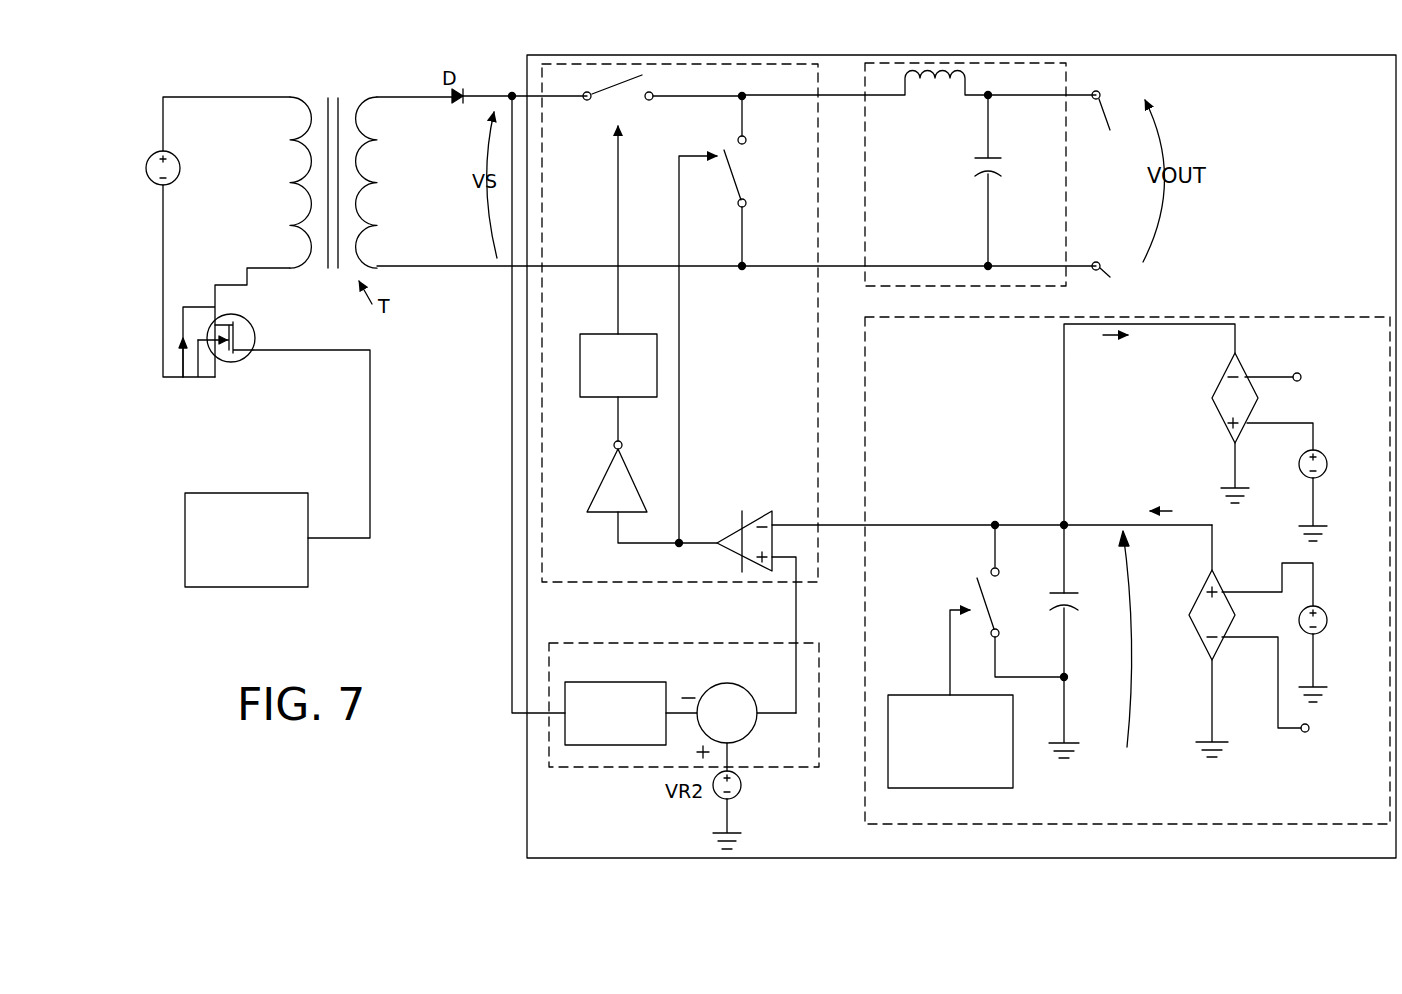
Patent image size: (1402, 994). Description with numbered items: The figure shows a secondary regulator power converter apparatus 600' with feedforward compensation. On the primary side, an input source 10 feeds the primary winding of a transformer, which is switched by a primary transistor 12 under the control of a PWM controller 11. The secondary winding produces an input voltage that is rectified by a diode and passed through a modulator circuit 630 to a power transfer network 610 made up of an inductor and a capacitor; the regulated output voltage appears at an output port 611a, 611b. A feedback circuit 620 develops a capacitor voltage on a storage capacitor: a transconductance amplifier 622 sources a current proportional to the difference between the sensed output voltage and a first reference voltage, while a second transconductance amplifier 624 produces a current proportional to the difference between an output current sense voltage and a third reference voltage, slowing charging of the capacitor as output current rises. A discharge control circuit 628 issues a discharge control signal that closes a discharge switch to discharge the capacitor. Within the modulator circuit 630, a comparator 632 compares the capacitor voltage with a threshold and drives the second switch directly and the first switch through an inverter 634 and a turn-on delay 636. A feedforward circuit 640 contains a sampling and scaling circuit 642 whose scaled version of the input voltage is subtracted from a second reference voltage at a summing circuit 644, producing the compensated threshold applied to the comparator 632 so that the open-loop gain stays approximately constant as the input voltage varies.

The input voltage source 10 is at (177, 160).
The PWM controller 11 is at (246, 492).
The primary transistor 12 is at (247, 323).
The power converter apparatus 600' is at (906, 456).
The power transfer network 610 is at (963, 287).
The output port 611a is at (1128, 117).
The output port 611b is at (1128, 275).
The feedback circuit 620 is at (1125, 316).
The transconductance amplifier 622 is at (1216, 590).
The second transconductance amplifier 624 is at (1212, 396).
The discharge control circuit 628 is at (1013, 742).
The modulator circuit 630 is at (680, 583).
The comparator 632 is at (742, 511).
The inverter 634 is at (613, 455).
The turn-on delay 636 is at (657, 365).
The feedforward circuit 640 is at (685, 767).
The sampling and scaling circuit 642 is at (617, 682).
The summing circuit 644 is at (728, 683).